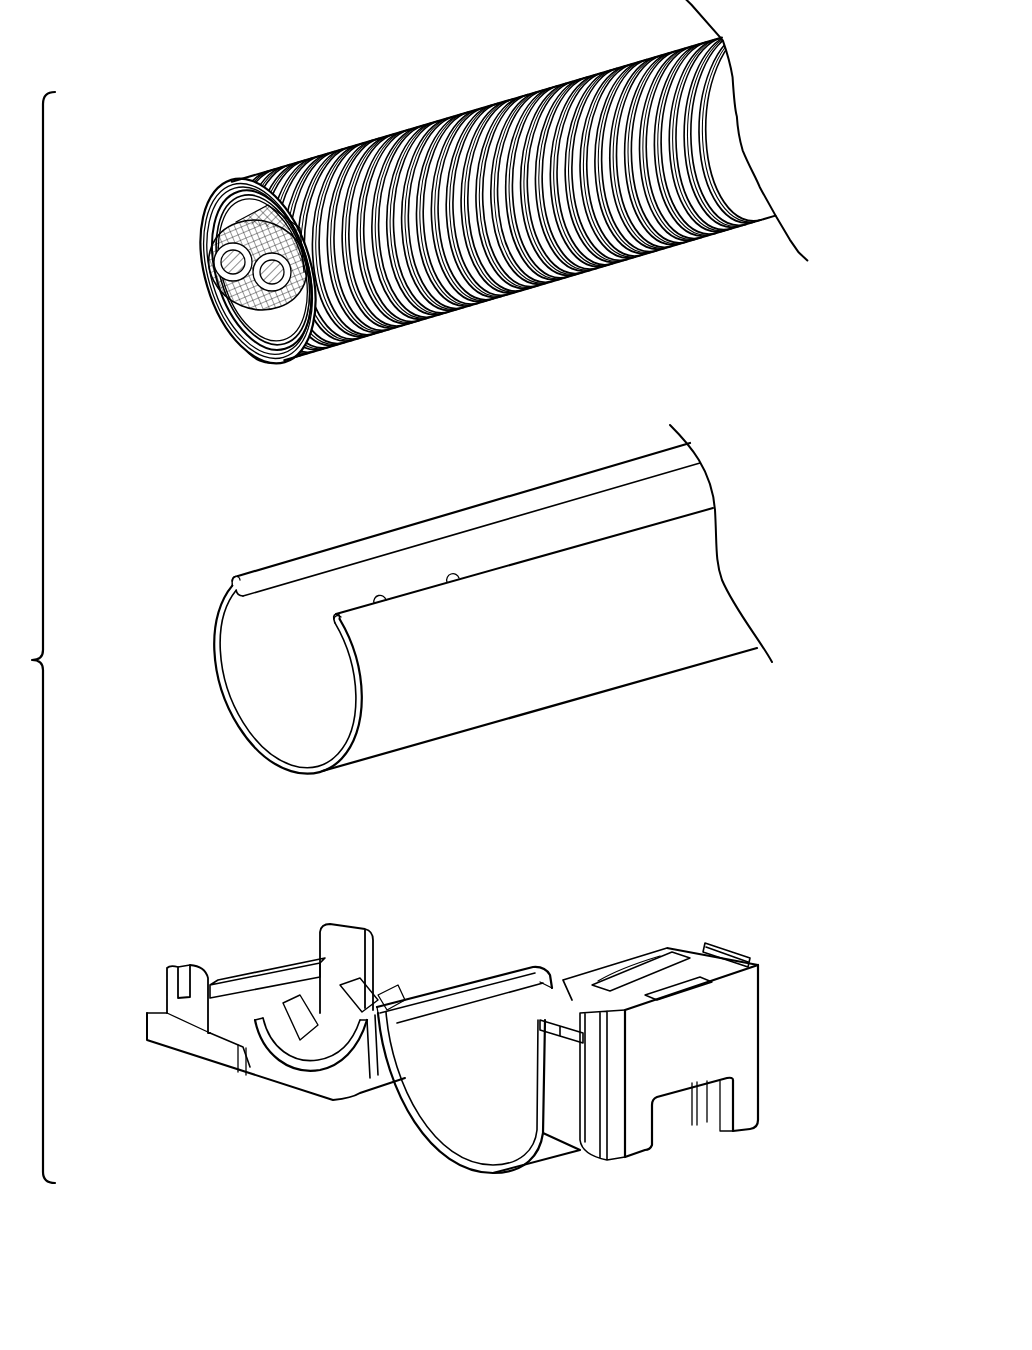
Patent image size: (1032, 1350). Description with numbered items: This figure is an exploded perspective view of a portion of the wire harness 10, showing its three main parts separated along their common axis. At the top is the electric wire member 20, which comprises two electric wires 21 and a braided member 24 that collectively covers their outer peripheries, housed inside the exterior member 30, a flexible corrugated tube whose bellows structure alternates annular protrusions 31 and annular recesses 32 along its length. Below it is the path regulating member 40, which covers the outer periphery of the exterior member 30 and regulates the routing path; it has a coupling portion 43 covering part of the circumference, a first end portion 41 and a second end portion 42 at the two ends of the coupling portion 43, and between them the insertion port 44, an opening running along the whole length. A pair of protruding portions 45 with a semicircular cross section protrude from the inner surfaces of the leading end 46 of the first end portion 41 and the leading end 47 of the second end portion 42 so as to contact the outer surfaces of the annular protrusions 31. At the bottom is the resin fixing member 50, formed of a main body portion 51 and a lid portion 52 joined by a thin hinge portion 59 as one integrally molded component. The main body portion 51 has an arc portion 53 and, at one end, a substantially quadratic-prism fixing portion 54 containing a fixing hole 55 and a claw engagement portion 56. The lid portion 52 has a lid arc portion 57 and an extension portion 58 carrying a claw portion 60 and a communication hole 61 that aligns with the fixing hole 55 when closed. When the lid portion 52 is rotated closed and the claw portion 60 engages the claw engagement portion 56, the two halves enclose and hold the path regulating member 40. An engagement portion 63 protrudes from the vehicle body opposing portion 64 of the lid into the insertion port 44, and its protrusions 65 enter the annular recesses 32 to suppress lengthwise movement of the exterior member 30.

The wire harness 10 is at (415, 70).
The electric wire member 20 is at (255, 312).
The electric wire 21 is at (252, 297).
The braided member 24 is at (214, 220).
The exterior member 30 is at (365, 141).
The annular protrusion 31 is at (286, 186).
The annular recess 32 is at (257, 172).
The path regulating member 40 is at (514, 496).
The first end portion 41 is at (343, 650).
The second end portion 42 is at (228, 595).
The coupling portion 43 is at (258, 748).
The insertion port 44 is at (457, 578).
The protruding portion 45 is at (224, 610).
The leading end of the first end portion 46 is at (383, 598).
The leading end of the second end portion 47 is at (304, 563).
The fixing member 50 is at (536, 944).
The main body portion 51 is at (425, 1126).
The lid portion 52 is at (265, 1086).
The arc portion 53 is at (463, 1136).
The fixing portion 54 is at (735, 1020).
The fixing hole 55 is at (630, 985).
The claw engagement portion 56 is at (735, 951).
The lid arc portion 57 is at (370, 1080).
The extension portion 58 is at (172, 1050).
The hinge portion 59 is at (440, 986).
The claw portion 60 is at (170, 998).
The communication hole 61 is at (238, 1000).
The engagement portion 63 is at (245, 1060).
The vehicle body opposing portion 64 is at (300, 1089).
The protrusion 65 is at (290, 1010).